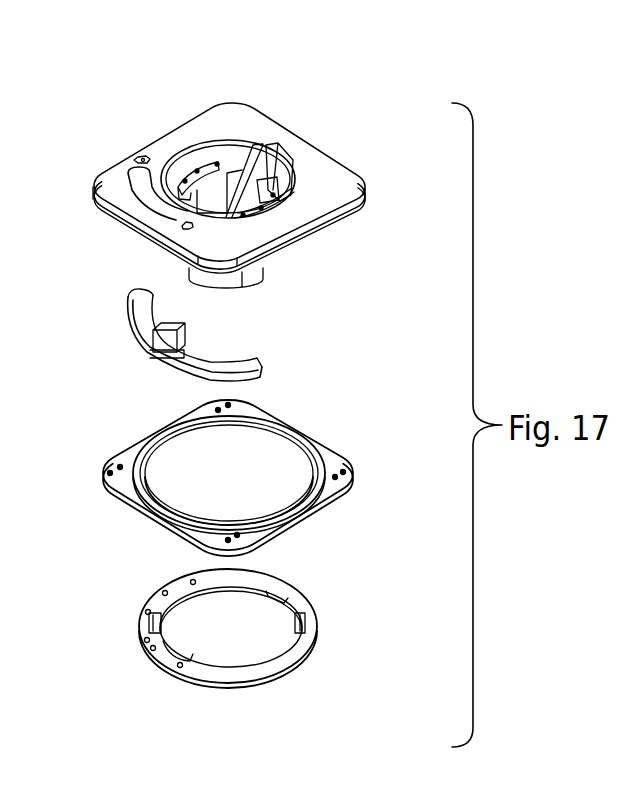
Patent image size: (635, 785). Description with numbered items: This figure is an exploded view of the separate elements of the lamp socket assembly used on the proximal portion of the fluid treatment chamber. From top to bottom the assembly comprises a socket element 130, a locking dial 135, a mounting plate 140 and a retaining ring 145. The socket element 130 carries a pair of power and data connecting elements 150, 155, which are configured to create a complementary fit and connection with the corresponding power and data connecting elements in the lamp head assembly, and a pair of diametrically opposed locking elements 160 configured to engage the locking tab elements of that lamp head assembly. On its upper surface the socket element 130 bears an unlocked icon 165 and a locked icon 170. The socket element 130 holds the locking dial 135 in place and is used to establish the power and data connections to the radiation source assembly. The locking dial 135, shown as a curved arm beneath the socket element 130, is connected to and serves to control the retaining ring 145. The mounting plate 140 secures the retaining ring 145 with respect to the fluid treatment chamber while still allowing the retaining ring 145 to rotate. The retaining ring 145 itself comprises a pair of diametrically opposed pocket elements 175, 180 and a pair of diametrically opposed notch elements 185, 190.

The socket element 130 is at (342, 177).
The locking dial 135 is at (248, 362).
The mounting plate 140 is at (337, 463).
The retaining ring 145 is at (295, 648).
The power and data connecting element 150 is at (262, 206).
The power and data connecting element 155 is at (208, 158).
The locking element 160 is at (278, 158).
The unlocked icon 165 is at (135, 153).
The locked icon 170 is at (180, 237).
The pocket element 175 is at (148, 613).
The pocket element 180 is at (305, 622).
The notch element 185 is at (167, 655).
The notch element 190 is at (287, 588).